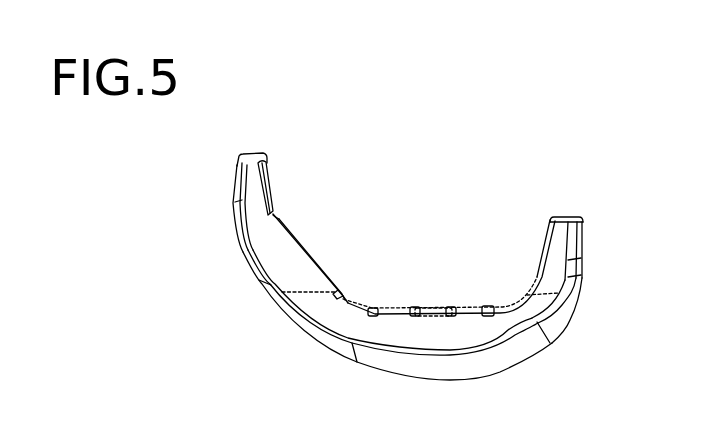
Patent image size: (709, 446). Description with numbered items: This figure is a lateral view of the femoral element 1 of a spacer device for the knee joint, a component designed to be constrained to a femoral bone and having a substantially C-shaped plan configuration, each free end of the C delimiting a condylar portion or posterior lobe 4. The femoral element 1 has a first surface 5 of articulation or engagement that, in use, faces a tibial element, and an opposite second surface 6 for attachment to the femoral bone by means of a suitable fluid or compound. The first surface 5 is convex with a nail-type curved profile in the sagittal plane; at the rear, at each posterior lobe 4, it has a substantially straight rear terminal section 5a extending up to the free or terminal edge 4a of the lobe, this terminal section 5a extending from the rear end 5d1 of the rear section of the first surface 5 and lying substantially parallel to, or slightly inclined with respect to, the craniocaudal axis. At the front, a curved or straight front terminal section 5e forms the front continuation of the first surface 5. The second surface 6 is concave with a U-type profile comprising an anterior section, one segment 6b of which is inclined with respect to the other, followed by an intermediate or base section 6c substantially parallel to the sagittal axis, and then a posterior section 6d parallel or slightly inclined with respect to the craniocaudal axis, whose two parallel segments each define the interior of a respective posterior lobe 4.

The femoral element 1 is at (459, 126).
The posterior lobe 4 is at (557, 230).
The terminal edge 4a is at (568, 218).
The first surface 5 is at (480, 376).
The rear terminal section 5a is at (587, 256).
The rear end 5d1 is at (570, 328).
The front terminal section 5e is at (235, 208).
The second surface 6 is at (481, 304).
The anterior section segment 6b is at (313, 266).
The intermediate or base section 6c is at (408, 306).
The posterior section 6d is at (267, 191).